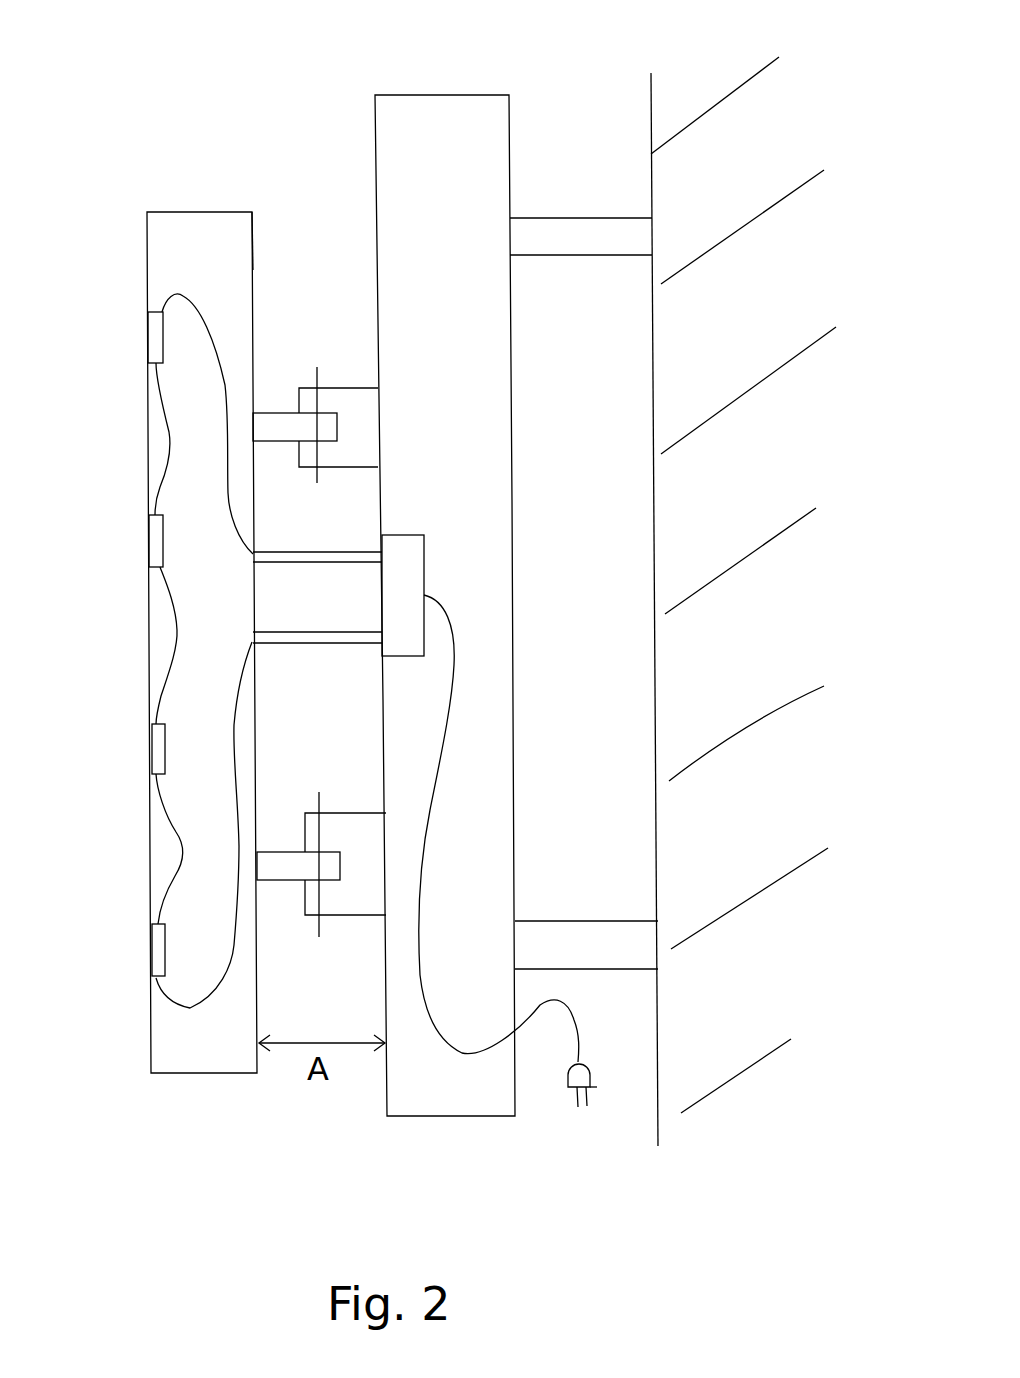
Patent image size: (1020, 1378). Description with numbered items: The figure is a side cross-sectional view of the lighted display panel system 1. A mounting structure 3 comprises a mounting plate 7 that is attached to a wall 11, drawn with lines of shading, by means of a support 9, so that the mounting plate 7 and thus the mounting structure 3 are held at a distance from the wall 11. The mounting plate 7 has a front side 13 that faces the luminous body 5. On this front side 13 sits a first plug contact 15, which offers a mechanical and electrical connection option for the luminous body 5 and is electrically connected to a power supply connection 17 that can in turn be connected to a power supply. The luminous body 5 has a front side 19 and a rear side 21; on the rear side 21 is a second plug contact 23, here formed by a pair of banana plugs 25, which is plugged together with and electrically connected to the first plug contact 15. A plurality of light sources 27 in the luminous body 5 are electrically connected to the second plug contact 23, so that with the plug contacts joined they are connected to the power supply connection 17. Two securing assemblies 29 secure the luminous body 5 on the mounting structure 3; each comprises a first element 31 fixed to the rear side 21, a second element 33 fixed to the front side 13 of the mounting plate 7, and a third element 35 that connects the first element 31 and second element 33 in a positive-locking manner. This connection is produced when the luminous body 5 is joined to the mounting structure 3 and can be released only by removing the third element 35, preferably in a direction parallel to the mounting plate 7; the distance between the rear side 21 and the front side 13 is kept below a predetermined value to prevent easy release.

The lighted display panel system 1 is at (192, 1175).
The mounting structure 3 is at (535, 54).
The luminous body 5 is at (180, 212).
The mounting plate 7 is at (513, 433).
The support 9 is at (570, 258).
The wall 11 is at (770, 494).
The front side 13 is at (377, 143).
The first plug contact 15 is at (408, 535).
The power supply connection 17 is at (563, 1078).
The front side 19 is at (148, 610).
The rear side 21 is at (253, 258).
The second plug contact 23 is at (245, 592).
The banana plugs 25 is at (308, 565).
The light sources 27 is at (147, 345).
The securing assembly 29 is at (303, 482).
The first element 31 is at (277, 413).
The second element 33 is at (343, 388).
The third element 35 is at (316, 368).